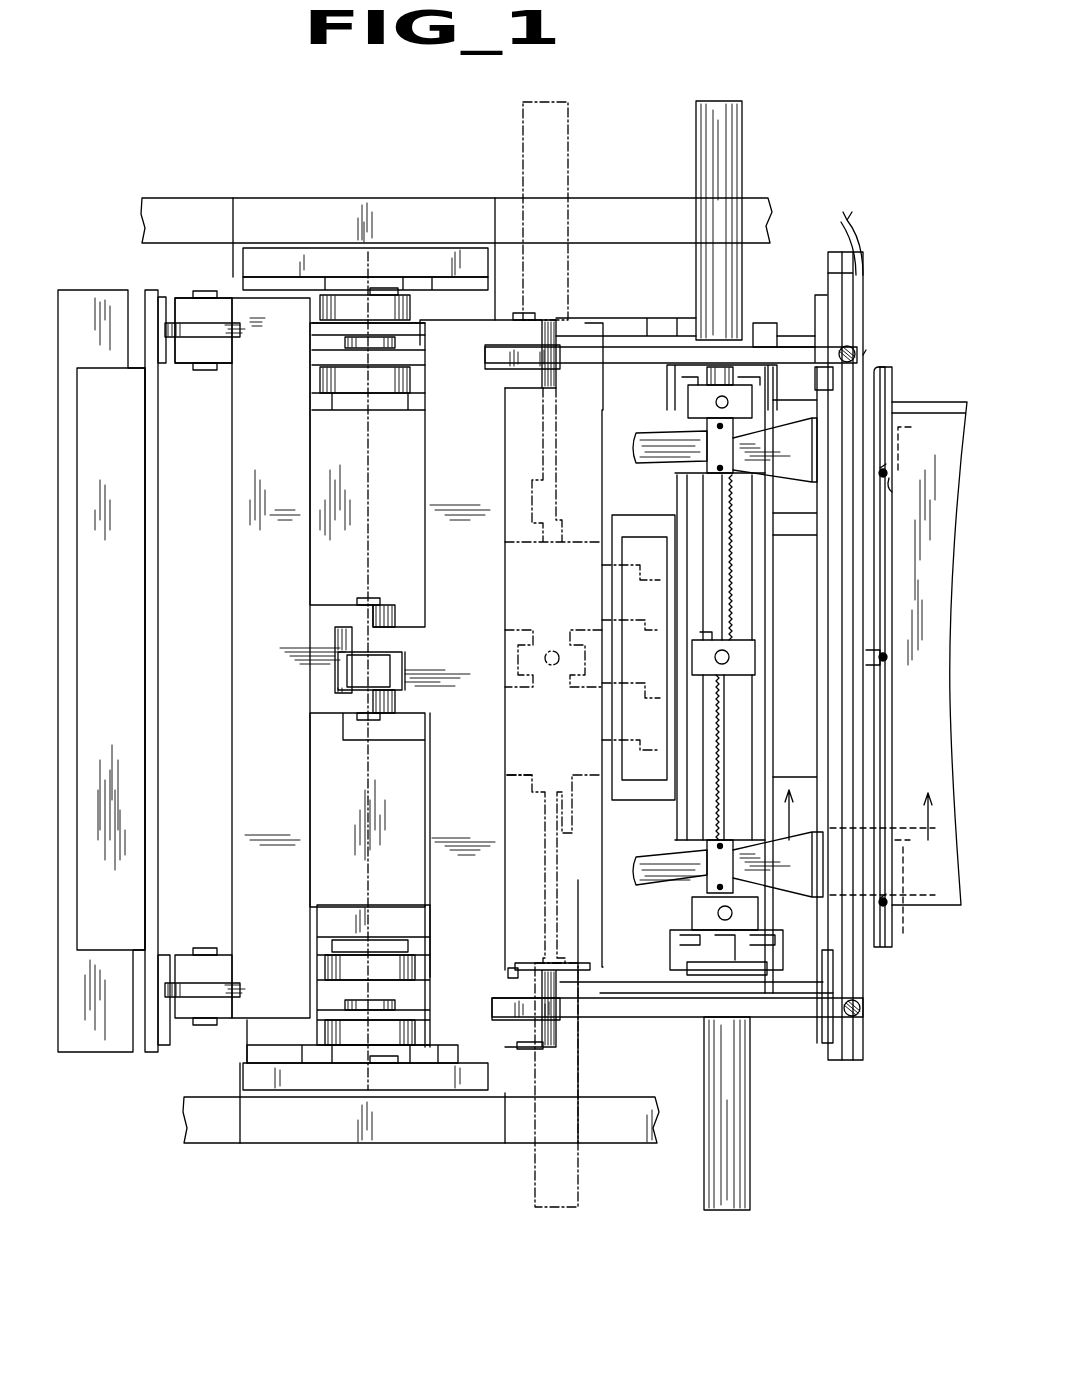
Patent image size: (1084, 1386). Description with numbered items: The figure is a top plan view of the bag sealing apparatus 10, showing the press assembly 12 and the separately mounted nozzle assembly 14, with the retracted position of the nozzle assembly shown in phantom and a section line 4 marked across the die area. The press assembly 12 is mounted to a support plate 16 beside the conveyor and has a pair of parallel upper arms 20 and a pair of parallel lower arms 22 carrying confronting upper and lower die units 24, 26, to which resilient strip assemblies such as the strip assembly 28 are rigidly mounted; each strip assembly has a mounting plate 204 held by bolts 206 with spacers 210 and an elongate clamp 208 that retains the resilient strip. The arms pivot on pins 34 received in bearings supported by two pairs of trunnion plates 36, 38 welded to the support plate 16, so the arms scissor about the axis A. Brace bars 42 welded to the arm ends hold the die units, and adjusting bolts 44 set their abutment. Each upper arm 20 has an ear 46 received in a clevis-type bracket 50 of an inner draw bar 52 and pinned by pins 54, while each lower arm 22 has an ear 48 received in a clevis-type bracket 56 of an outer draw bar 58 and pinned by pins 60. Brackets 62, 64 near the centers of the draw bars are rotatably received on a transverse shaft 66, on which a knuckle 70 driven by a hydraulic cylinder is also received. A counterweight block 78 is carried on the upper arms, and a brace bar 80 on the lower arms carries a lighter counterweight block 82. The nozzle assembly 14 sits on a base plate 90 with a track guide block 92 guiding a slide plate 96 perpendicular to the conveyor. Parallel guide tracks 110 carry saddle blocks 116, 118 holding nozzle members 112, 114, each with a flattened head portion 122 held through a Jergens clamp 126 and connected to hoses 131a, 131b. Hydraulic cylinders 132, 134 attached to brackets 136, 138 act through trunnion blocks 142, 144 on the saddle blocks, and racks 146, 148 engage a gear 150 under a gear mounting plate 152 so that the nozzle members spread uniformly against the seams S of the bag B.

The bag sealing apparatus 10 is at (725, 54).
The press assembly 12 is at (175, 285).
The nozzle assembly 14 is at (758, 281).
The support plate 16 is at (412, 207).
The upper arms 20 is at (640, 347).
The lower arms 22 is at (636, 332).
The upper die unit 24 is at (874, 284).
The lower die unit 26 is at (872, 244).
The resilient strip assembly 28 is at (894, 371).
The pins 34 is at (380, 273).
The trunnion plates 36 is at (445, 295).
The trunnion plates 38 is at (425, 950).
The brace bars 42 is at (815, 322).
The adjusting bolts 44 is at (853, 347).
The ear 46 is at (562, 350).
The ear 48 is at (165, 329).
The clevis-type brackets 50 is at (575, 365).
The inner draw bar 52 is at (432, 808).
The pins 54 is at (517, 315).
The clevis-type brackets 56 is at (235, 315).
The outer draw bar 58 is at (305, 462).
The pins 60 is at (205, 370).
The bracket 62 is at (395, 728).
The bracket 64 is at (340, 698).
The shaft 66 is at (366, 598).
The knuckle 70 is at (380, 680).
The counterweight block 78 is at (100, 1052).
The brace bar 80 is at (150, 633).
The counterweight block 82 is at (122, 643).
The base plate 90 is at (643, 527).
The track guide block 92 is at (625, 553).
The slide plate 96 is at (790, 535).
The guide tracks 110 is at (700, 552).
The nozzle member 112 is at (806, 424).
The nozzle member 114 is at (655, 780).
The saddle block 116 is at (680, 425).
The saddle block 118 is at (507, 787).
The head portion 122 is at (919, 686).
The Jergens clamp 126 is at (707, 478).
The hose 131a is at (640, 437).
The hose 131b is at (632, 876).
The hydraulic cylinder 132 is at (522, 150).
The hydraulic cylinder 134 is at (580, 1188).
The bracket 136 is at (680, 378).
The bracket 138 is at (672, 957).
The trunnion block 142 is at (690, 397).
The trunnion block 144 is at (695, 930).
The rack 146 is at (740, 585).
The rack 148 is at (712, 820).
The gear 150 is at (730, 657).
The gear mounting plate 152 is at (748, 642).
The mounting plate 204 is at (866, 350).
The bolts 206 is at (883, 478).
The clamp 208 is at (879, 367).
The spacers 210 is at (880, 482).
The axis A— A is at (365, 262).
The bag B is at (935, 488).
The seams S is at (955, 400).
The section line 4- 4 is at (860, 842).